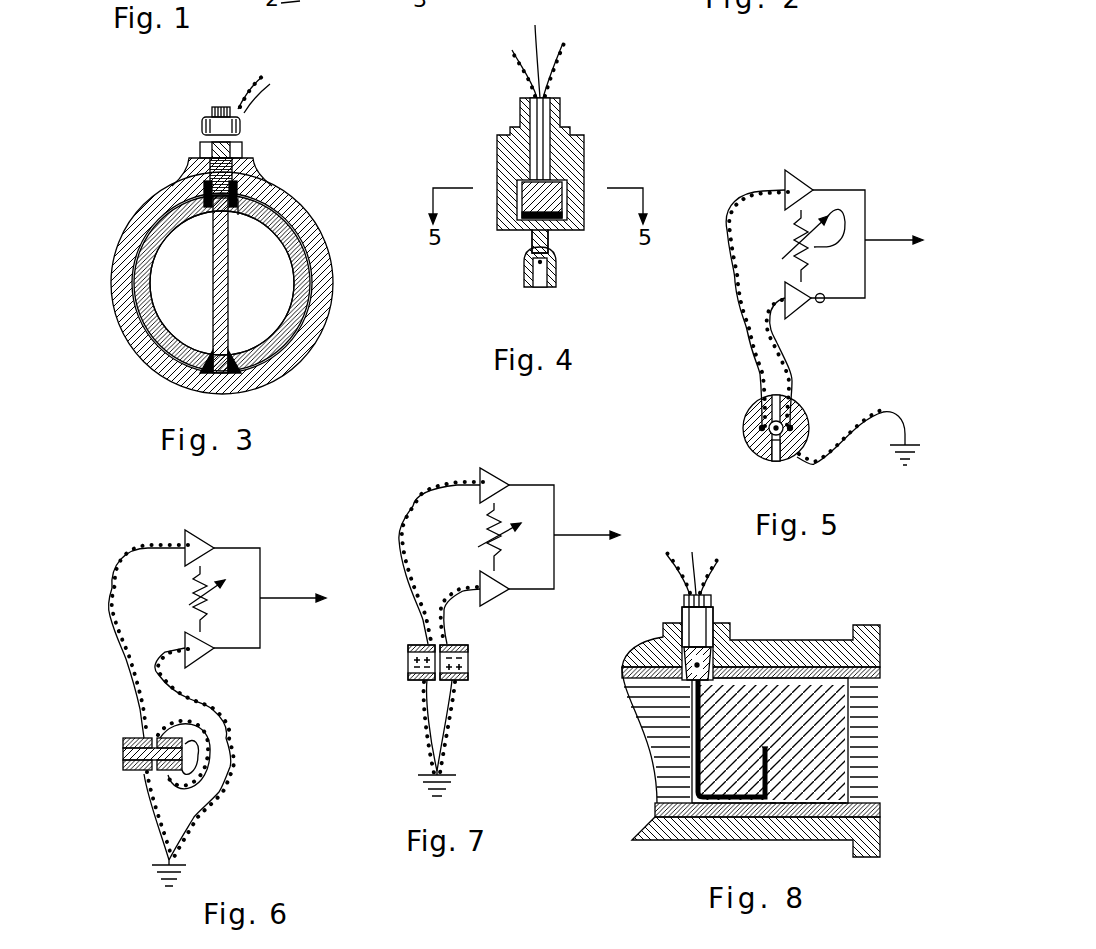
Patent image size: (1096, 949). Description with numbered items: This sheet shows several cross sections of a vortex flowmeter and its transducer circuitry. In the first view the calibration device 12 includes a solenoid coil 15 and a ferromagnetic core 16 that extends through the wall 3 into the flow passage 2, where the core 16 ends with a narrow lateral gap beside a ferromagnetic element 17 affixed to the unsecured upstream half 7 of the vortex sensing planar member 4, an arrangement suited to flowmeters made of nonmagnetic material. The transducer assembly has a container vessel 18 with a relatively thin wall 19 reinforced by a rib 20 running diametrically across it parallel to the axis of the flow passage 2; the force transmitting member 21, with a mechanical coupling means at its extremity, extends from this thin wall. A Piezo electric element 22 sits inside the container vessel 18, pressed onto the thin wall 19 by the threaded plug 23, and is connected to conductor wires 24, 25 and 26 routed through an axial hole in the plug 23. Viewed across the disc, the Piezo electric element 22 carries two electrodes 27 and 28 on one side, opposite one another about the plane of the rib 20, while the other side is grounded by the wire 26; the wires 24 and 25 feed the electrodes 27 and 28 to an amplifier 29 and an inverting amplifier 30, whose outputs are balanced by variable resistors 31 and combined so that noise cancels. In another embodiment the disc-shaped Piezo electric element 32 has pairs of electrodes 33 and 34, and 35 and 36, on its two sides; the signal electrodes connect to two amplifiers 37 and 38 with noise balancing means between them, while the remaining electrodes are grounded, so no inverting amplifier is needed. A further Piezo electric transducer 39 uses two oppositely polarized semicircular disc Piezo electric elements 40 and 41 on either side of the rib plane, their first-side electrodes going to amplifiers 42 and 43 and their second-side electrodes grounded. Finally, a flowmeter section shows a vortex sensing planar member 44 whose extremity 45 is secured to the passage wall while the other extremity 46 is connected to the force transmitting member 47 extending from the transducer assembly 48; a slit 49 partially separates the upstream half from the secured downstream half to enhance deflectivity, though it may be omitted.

In FIG. 3, the flow passage 2 is at (185, 297).
In FIG. 3, the wall 3 is at (175, 247).
In FIG. 3, the vortex sensing planar member 4 is at (228, 282).
In FIG. 3, the unsecured upstream half 7 is at (230, 238).
In FIG. 3, the calibration device 12 is at (242, 137).
In FIG. 3, the solenoid coil 15 is at (202, 127).
In FIG. 3, the core 16 is at (204, 187).
In FIG. 3, the ferromagnetic element 17 is at (265, 188).
In FIG. 4, the container vessel 18 is at (497, 157).
In FIG. 4, the thin wall 19 is at (557, 233).
In FIG. 4, the rib 20 is at (530, 240).
In FIG. 4, the force transmitting member 21 is at (557, 272).
In FIG. 4, the Piezo electric element 22 is at (557, 200).
In FIG. 5, the Piezo electric element 22 is at (777, 463).
In FIG. 4, the threaded plug 23 is at (565, 130).
In FIG. 4, the conductor wire 24 is at (520, 72).
In FIG. 5, the conductor wire 24 is at (756, 365).
In FIG. 4, the conductor wire 25 is at (560, 62).
In FIG. 5, the conductor wire 25 is at (796, 357).
In FIG. 4, the conductor wire 26 is at (533, 45).
In FIG. 5, the conductor wire 26 is at (847, 448).
In FIG. 5, the electrode 27 is at (753, 436).
In FIG. 5, the electrode 28 is at (804, 419).
In FIG. 5, the amplifier 29 is at (797, 176).
In FIG. 5, the inverting amplifier 30 is at (812, 302).
In FIG. 5, the variable resistors 31 is at (845, 190).
In FIG. 6, the Piezo electric element 32 is at (124, 756).
In FIG. 6, the electrode 33 is at (139, 738).
In FIG. 6, the electrode 34 is at (208, 735).
In FIG. 6, the electrode 35 is at (130, 777).
In FIG. 6, the electrode 36 is at (230, 784).
In FIG. 6, the amplifier 37 is at (198, 545).
In FIG. 6, the amplifier 38 is at (203, 659).
In FIG. 7, the Piezo electric transducer 39 is at (416, 688).
In FIG. 7, the semicircular disc Piezo electric element 40 is at (407, 663).
In FIG. 7, the semicircular disc Piezo electric element 41 is at (468, 663).
In FIG. 7, the amplifier 42 is at (499, 472).
In FIG. 7, the amplifier 43 is at (499, 604).
In FIG. 8, the vortex sensing planar member 44 is at (708, 718).
In FIG. 8, the extremity 45 is at (832, 802).
In FIG. 8, the extremity 46 is at (740, 668).
In FIG. 8, the force transmitting member 47 is at (733, 742).
In FIG. 8, the transducer assembly 48 is at (697, 622).
In FIG. 8, the slit 49 is at (827, 762).